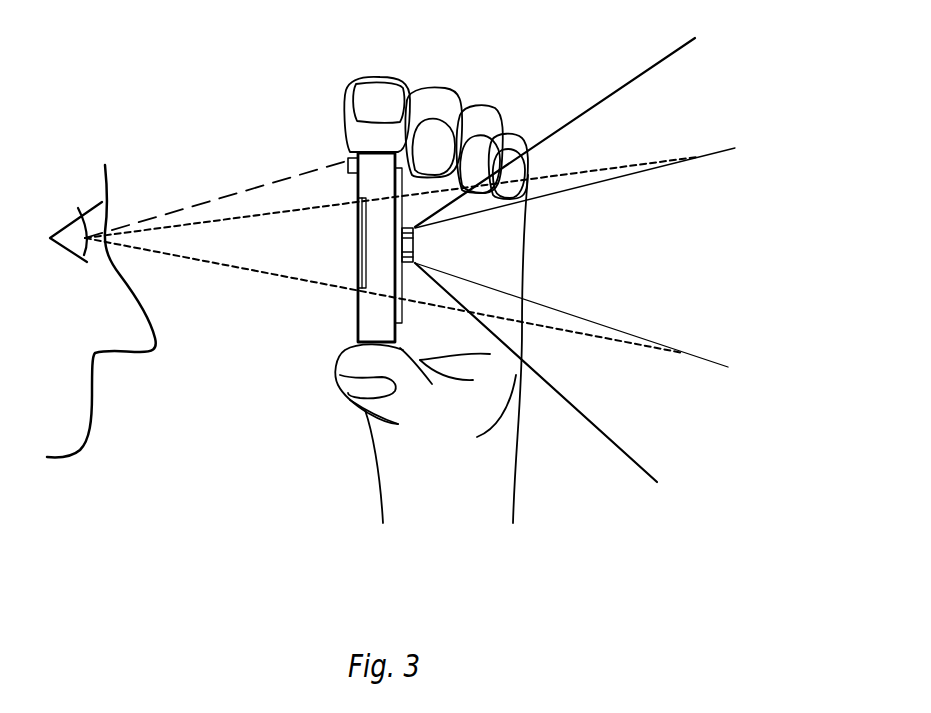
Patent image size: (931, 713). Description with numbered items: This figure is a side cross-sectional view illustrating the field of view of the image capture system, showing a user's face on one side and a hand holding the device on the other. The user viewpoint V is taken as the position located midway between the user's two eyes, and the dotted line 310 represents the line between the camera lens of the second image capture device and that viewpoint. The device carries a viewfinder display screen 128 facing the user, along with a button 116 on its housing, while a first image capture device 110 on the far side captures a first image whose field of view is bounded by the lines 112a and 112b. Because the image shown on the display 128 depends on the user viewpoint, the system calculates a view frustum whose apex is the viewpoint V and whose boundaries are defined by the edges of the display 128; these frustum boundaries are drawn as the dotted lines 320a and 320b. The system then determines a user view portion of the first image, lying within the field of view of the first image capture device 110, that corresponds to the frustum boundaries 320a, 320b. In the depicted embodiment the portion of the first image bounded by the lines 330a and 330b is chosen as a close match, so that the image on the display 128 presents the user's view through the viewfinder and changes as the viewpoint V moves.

The user viewpoint V is at (78, 223).
The dotted line 310 is at (202, 202).
The view frustum boundary 320a is at (283, 212).
The view frustum boundary 320b is at (270, 273).
The button 116 is at (347, 162).
The viewfinder display screen 128 is at (360, 272).
The first image capture device 110 is at (413, 250).
The first field of view boundary 112a is at (658, 63).
The first field of view boundary 112b is at (623, 453).
The user view portion boundary 330a is at (597, 183).
The user view portion boundary 330b is at (592, 320).